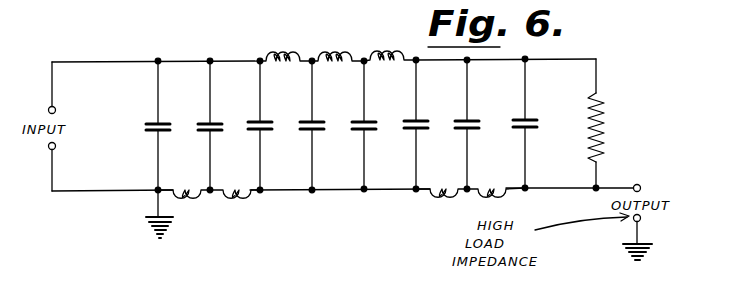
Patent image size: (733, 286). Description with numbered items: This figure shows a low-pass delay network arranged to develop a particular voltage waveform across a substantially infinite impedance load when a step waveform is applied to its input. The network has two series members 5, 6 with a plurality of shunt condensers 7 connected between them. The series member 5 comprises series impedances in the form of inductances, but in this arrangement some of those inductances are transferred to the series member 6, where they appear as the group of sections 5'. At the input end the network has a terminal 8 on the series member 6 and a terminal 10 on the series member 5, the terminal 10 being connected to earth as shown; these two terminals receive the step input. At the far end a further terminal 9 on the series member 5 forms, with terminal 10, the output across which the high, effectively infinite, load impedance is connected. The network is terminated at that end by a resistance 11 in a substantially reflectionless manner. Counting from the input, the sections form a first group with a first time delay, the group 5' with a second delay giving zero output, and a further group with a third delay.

The series member 5 is at (349, 209).
The transferred inductance sections 5' is at (338, 39).
The series member 6 is at (229, 60).
The shunt condensers 7 is at (306, 133).
The terminal 8 is at (158, 59).
The terminal 9 is at (594, 190).
The terminal 10 is at (157, 191).
The resistance 11 is at (602, 126).